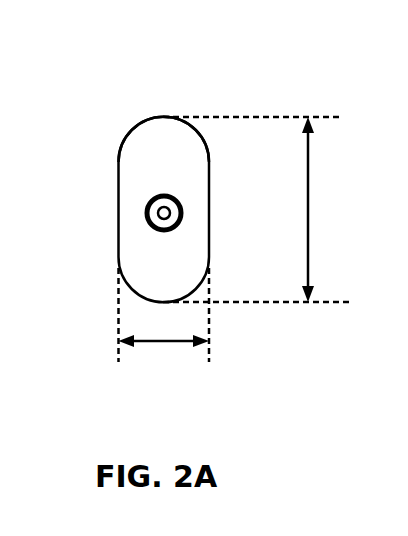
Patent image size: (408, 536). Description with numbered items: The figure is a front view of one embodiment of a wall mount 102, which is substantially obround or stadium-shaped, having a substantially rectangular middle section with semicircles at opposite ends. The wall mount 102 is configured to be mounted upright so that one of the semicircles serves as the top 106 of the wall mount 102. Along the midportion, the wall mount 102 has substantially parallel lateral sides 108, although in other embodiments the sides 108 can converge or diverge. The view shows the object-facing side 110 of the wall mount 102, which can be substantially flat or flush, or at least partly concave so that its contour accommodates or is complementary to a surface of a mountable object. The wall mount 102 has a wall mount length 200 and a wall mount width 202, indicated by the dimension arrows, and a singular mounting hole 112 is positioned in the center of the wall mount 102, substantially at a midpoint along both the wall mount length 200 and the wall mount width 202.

The wall mount 102 is at (93, 52).
The top 106 is at (158, 117).
The lateral sides 108 is at (118, 203).
The object-facing side 110 is at (125, 233).
The singular mounting hole 112 is at (177, 213).
The wall mount length 200 is at (308, 211).
The wall mount width 202 is at (163, 344).